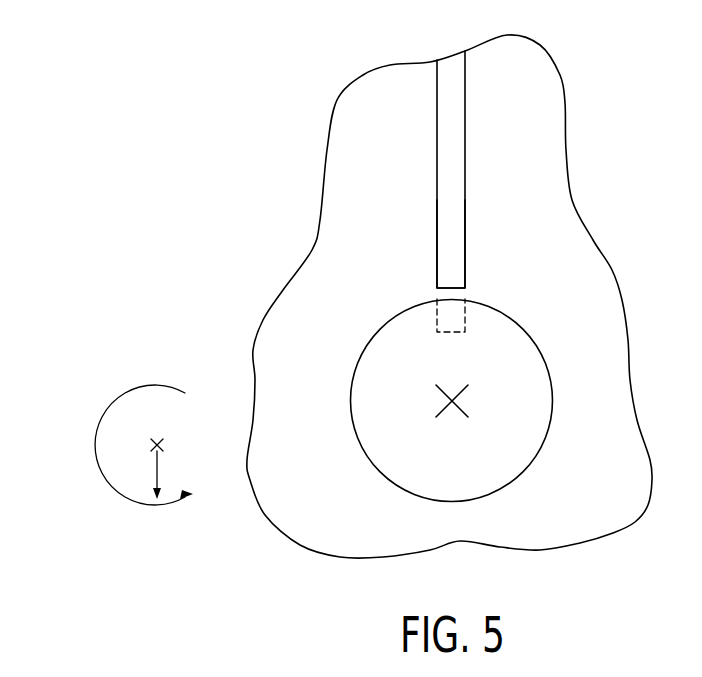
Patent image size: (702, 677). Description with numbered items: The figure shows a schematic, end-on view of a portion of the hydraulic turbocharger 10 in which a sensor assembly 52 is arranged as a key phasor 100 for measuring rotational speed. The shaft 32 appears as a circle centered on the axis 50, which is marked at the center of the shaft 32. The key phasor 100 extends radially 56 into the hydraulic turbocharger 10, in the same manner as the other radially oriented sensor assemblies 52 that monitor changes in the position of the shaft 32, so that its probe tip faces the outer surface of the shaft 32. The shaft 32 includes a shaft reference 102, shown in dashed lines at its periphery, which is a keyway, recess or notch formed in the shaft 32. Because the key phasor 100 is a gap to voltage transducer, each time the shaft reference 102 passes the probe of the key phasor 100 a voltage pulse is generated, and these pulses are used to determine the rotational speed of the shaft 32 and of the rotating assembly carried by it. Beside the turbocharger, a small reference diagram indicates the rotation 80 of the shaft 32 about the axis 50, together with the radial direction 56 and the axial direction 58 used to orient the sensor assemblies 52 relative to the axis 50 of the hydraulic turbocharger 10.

The hydraulic turbocharger 10 is at (282, 167).
The shaft 32 is at (380, 474).
The axis 50 is at (455, 404).
The sensor assembly 52 is at (465, 185).
The radial direction 56 is at (160, 465).
The axial direction 58 is at (163, 441).
The rotation direction 80 is at (97, 441).
The key phasor 100 is at (465, 228).
The shaft reference 102 is at (437, 316).